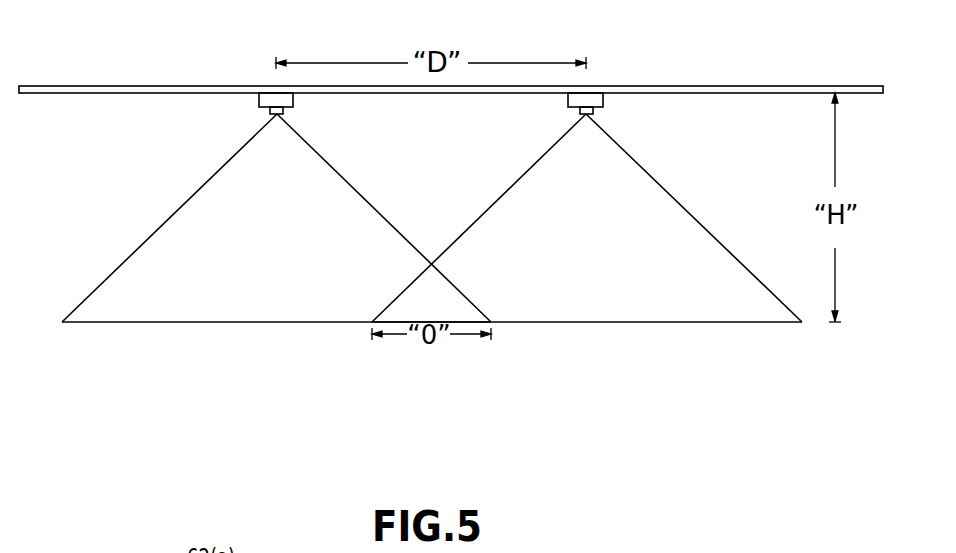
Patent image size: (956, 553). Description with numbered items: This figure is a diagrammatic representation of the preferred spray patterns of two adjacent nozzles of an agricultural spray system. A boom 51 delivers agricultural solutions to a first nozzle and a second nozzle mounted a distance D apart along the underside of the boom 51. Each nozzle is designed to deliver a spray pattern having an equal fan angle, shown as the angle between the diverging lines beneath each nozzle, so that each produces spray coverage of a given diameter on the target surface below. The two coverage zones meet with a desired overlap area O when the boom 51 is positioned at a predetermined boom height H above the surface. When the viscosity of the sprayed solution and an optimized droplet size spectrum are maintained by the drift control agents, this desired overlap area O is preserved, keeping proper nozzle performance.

The boom 51 is at (721, 86).